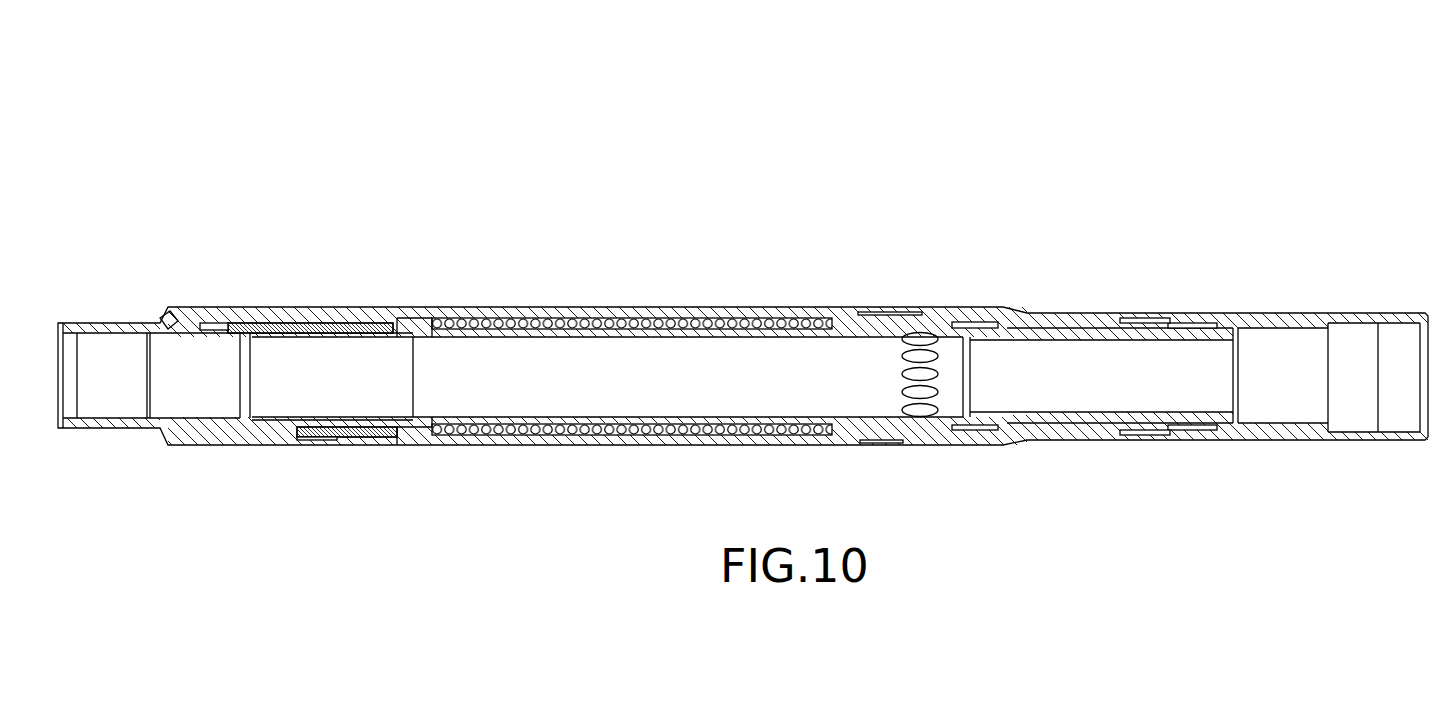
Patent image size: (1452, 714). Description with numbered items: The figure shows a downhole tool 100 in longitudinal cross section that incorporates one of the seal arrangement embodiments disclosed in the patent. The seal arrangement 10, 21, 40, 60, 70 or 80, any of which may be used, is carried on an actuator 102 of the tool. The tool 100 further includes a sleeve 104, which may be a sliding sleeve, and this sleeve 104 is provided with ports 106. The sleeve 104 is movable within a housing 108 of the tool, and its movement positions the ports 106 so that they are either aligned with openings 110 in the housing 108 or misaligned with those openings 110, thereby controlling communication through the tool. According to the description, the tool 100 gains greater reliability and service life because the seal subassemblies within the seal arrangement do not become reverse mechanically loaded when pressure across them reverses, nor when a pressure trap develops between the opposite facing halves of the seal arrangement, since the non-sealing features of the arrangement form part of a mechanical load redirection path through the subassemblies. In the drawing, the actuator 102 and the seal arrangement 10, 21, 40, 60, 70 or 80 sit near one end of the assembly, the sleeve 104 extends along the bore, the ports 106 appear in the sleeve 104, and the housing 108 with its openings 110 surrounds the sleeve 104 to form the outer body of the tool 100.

The downhole tool 100 is at (743, 258).
The seal arrangement 10 is at (360, 319).
The seal arrangement 21 is at (360, 319).
The seal arrangement 40 is at (360, 319).
The seal arrangement 60 is at (360, 319).
The seal arrangement 70 is at (360, 319).
The seal arrangement 80 is at (235, 327).
The actuator 102 is at (297, 328).
The sleeve 104 is at (338, 385).
The ports 106 is at (903, 375).
The housing 108 is at (847, 320).
The openings 110 is at (1030, 318).